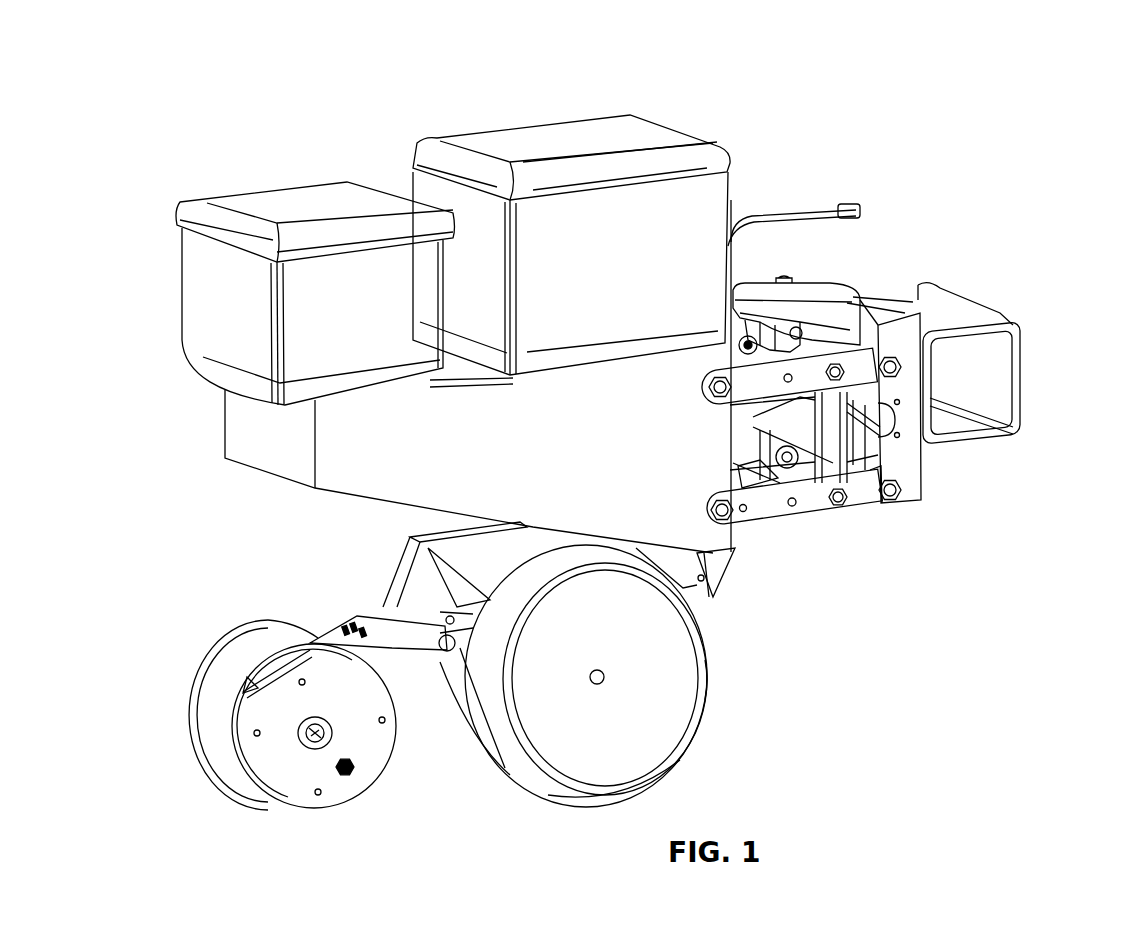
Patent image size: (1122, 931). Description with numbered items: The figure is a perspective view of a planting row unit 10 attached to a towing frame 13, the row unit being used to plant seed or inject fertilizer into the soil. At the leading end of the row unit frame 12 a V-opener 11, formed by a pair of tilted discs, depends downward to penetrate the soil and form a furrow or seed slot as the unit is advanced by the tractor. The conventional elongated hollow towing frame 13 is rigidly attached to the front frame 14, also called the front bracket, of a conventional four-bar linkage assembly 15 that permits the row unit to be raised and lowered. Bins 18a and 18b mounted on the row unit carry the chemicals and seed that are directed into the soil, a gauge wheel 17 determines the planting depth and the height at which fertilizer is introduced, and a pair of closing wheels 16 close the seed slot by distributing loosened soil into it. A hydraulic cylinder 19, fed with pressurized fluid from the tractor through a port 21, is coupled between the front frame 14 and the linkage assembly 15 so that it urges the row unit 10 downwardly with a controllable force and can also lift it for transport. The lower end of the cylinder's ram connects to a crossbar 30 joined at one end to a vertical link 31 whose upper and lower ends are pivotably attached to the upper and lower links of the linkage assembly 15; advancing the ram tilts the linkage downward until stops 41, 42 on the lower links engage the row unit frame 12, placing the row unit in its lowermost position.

The planting row unit 10 is at (1003, 82).
The V-opener 11 is at (710, 666).
The row unit frame 12 is at (350, 498).
The towing frame 13 is at (998, 442).
The front frame 14 is at (925, 478).
The four-bar linkage assembly 15 is at (857, 512).
The closing wheels 16 is at (290, 786).
The gauge wheel 17 is at (602, 748).
The bin 18a is at (580, 222).
The bin 18b is at (345, 283).
The hydraulic cylinder 19 is at (800, 330).
The port 21 is at (768, 212).
The crossbar 30 is at (793, 418).
The vertical link 31 is at (830, 473).
The stop 41 is at (740, 480).
The stop 42 is at (753, 532).